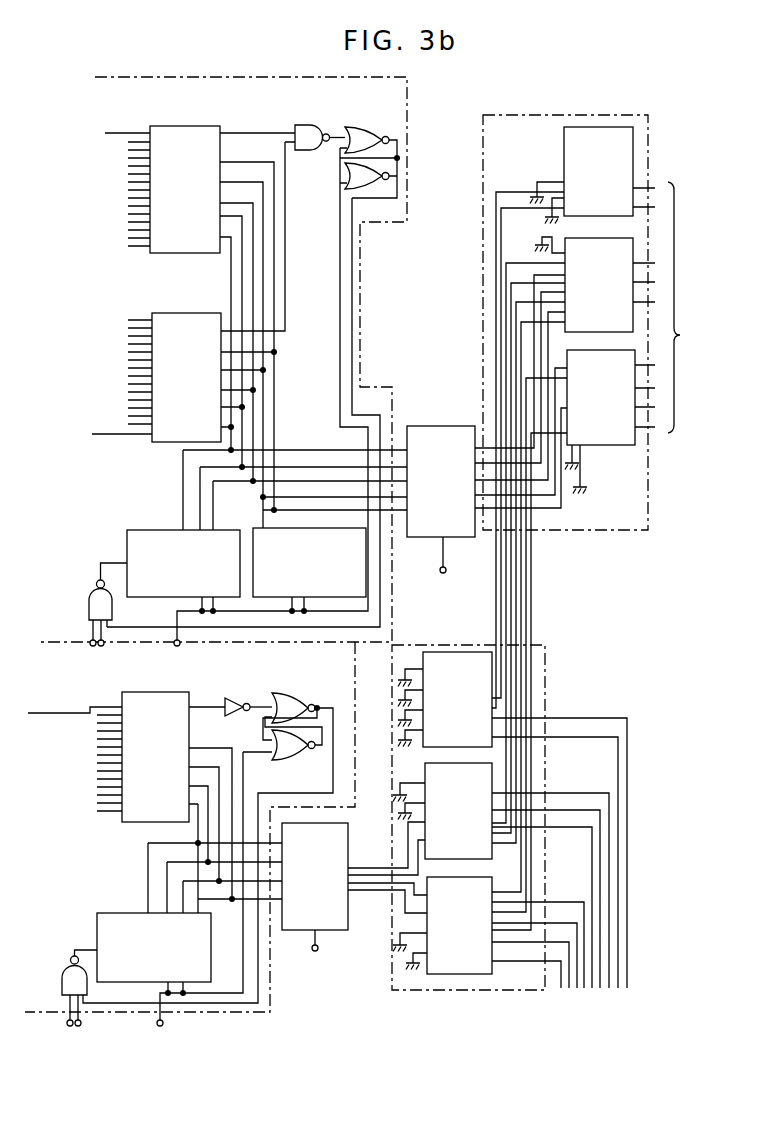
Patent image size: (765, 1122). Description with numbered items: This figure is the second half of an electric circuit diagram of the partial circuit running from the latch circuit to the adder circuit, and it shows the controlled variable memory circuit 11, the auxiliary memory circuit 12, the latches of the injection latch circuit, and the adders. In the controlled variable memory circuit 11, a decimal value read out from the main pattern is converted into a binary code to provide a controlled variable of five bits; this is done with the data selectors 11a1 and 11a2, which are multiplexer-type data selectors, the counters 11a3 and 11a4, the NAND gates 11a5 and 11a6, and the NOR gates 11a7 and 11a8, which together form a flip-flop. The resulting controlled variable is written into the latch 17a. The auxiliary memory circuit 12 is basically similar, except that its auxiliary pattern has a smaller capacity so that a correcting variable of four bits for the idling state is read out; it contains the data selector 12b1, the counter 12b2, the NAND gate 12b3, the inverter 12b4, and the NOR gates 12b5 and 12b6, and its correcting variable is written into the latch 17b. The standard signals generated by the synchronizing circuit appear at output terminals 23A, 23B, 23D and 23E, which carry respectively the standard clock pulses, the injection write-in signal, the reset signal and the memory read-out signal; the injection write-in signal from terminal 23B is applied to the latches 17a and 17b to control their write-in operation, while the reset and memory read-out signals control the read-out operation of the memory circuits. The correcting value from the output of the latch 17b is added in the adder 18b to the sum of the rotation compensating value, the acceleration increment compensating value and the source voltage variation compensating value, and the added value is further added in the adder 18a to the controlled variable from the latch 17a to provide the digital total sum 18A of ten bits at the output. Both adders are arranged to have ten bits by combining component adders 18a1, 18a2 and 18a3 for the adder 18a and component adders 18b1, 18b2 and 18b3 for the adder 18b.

The controlled variable memory circuit 11 is at (408, 115).
The data selector 11a1 is at (187, 126).
The data selector 11a2 is at (182, 313).
The counter 11a3 is at (145, 530).
The counter 11a4 is at (253, 535).
The NAND gate 11a5 is at (89, 604).
The NAND gate 11a6 is at (305, 125).
The NOR gate 11a7 is at (358, 127).
The NOR gate 11a8 is at (345, 178).
The auxiliary memory circuit 12 is at (355, 660).
The data selector 12b1 is at (139, 681).
The counter 12b2 is at (110, 913).
The NAND gate 12b3 is at (63, 968).
The inverter 12b4 is at (234, 690).
The NOR gate 12b5 is at (300, 690).
The NOR gate 12b6 is at (290, 760).
The latch 17a is at (430, 426).
The latch 17b is at (349, 851).
The adder 18a is at (492, 115).
The adder 18a1 is at (564, 158).
The adder 18a2 is at (582, 241).
The adder 18a3 is at (583, 353).
The digital total sum 18A is at (693, 307).
The adder 18b is at (545, 681).
The adder 18b1 is at (450, 652).
The adder 18b2 is at (425, 770).
The adder 18b3 is at (440, 880).
The output terminal 23A is at (91, 646).
The output terminal 23B is at (381, 758).
The output terminal 23D is at (179, 646).
The output terminal 23E is at (102, 646).